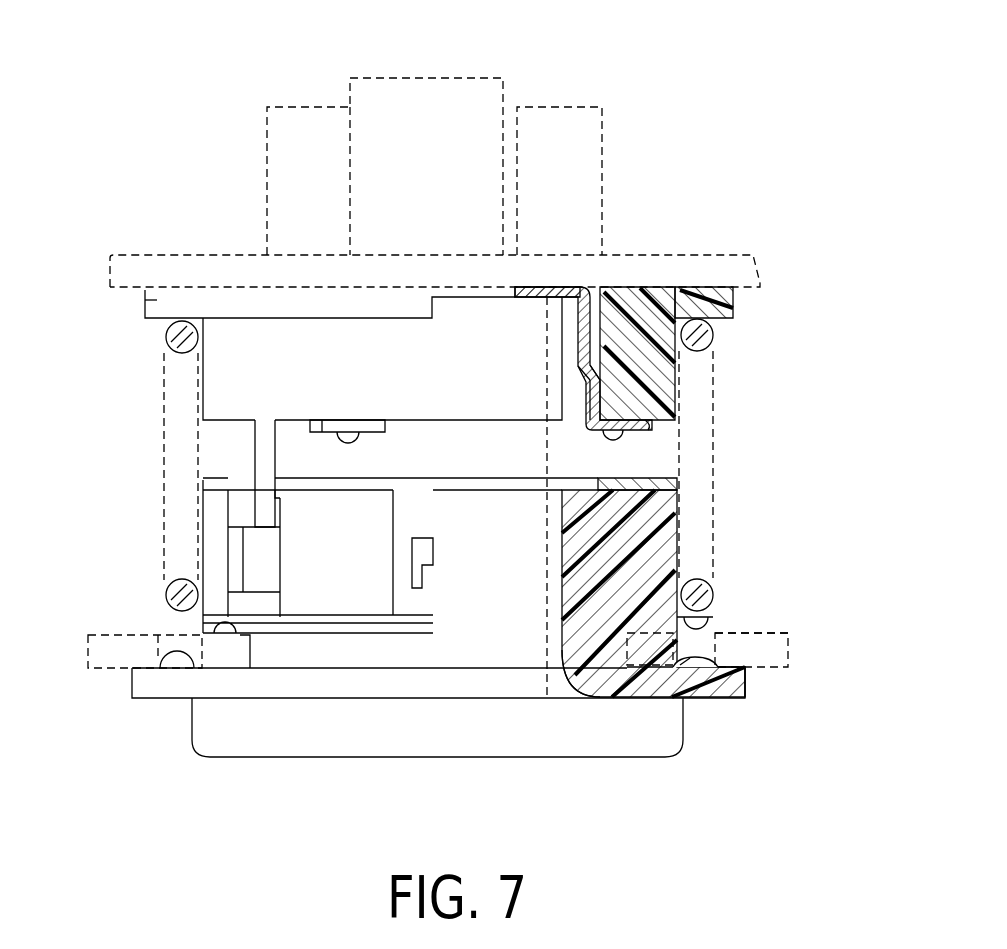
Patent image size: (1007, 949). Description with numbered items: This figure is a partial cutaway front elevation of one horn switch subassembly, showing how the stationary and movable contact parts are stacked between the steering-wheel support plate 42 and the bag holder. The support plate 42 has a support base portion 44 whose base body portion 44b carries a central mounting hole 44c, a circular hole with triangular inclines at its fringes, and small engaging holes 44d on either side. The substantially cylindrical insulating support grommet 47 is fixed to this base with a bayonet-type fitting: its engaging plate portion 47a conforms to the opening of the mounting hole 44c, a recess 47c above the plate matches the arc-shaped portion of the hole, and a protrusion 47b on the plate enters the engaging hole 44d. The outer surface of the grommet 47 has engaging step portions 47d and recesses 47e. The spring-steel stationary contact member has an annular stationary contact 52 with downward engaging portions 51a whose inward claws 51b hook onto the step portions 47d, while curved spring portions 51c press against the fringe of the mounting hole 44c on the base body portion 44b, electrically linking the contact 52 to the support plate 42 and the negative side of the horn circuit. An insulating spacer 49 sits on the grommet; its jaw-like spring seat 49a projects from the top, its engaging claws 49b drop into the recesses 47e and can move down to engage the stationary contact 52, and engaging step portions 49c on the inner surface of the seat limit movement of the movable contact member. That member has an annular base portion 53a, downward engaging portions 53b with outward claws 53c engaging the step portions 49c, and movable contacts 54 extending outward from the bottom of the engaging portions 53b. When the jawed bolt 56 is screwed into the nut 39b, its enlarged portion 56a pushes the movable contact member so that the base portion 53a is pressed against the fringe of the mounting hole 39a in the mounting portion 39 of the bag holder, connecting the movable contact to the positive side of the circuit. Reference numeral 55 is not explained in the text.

The mounting portion 39 is at (727, 263).
The mounting hole 39a is at (518, 142).
The nut 39b is at (300, 122).
The support plate 42 is at (797, 703).
The support base portion 44 is at (488, 688).
The base body portion 44b is at (787, 655).
The mounting hole 44c is at (253, 648).
The engaging hole 44d is at (172, 660).
The support grommet 47 is at (667, 532).
The engaging plate portion 47a is at (733, 697).
The protrusion 47b is at (695, 663).
The recess 47c is at (612, 667).
The engaging step portion 47d is at (427, 552).
The recess 47e is at (253, 553).
The insulating spacer 49 is at (690, 378).
The spring seat 49a is at (145, 302).
The engaging claw 49b is at (242, 510).
The engaging step portion 49c is at (593, 390).
The engaging portion 51a is at (420, 505).
The engaging claw 51b is at (430, 577).
The spring portion 51c is at (340, 625).
The stationary contact 52 is at (640, 478).
The base portion 53a is at (552, 297).
The engaging portion 53b is at (735, 303).
The engaging claw 53c is at (583, 360).
The movable contact 54 is at (650, 442).
The ball bearing 55 is at (170, 595).
The jawed bolt 56 is at (495, 687).
The enlarged portion 56a is at (525, 307).